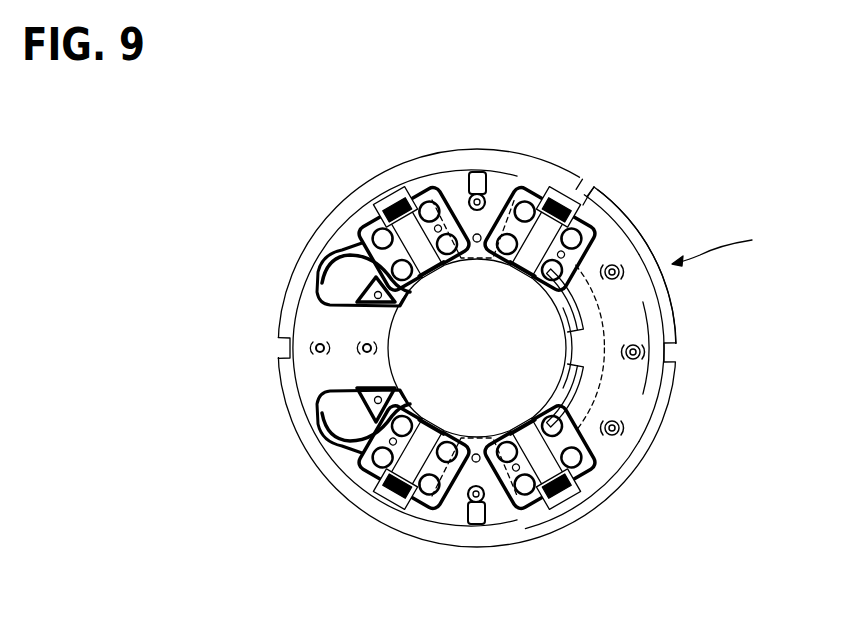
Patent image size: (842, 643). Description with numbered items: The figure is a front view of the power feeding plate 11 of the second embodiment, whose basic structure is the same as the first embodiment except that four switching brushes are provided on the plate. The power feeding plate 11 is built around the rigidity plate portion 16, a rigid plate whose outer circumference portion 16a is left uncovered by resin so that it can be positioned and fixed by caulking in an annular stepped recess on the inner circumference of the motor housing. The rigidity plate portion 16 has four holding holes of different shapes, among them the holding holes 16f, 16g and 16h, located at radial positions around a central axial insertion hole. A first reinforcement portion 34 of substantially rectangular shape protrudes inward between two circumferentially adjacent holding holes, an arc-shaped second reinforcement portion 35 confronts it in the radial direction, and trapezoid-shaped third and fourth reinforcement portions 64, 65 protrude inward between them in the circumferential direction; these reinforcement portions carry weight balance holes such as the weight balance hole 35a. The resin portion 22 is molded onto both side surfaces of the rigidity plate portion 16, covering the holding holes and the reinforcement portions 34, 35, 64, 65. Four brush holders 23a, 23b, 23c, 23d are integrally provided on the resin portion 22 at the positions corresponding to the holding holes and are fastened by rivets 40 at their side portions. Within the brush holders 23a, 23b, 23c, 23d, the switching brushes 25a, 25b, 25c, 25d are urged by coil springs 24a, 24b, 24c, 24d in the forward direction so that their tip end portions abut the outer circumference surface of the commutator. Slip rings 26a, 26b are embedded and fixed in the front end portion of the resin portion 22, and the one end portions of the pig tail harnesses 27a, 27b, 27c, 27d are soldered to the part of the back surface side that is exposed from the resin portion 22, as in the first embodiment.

The power feeding plate 11 is at (724, 245).
The rigidity plate portion 16 is at (641, 222).
The outer circumference portion 16a is at (666, 300).
The holding hole 16f is at (337, 248).
The holding hole 16g is at (596, 234).
The holding hole 16h is at (533, 513).
The resin portion 22 is at (652, 388).
The brush holder 23a is at (415, 222).
The brush holder 23b is at (537, 200).
The brush holder 23c is at (560, 478).
The brush holder 23d is at (420, 485).
The coil spring 24a is at (393, 205).
The coil spring 24b is at (568, 200).
The coil spring 24c is at (562, 495).
The coil spring 24d is at (390, 490).
The switching brush 25a is at (437, 272).
The switching brush 25b is at (517, 273).
The switching brush 25c is at (428, 422).
The switching brush 25d is at (527, 420).
The slip ring 26a is at (653, 345).
The slip ring 26b is at (302, 418).
The pig tail harness 27a is at (332, 288).
The pig tail harness 27b is at (578, 305).
The pig tail harness 27c is at (598, 398).
The pig tail harness 27d is at (340, 432).
The first reinforcement portion 34 is at (337, 364).
The second reinforcement portion 35 is at (582, 352).
The weight balance hole 35a is at (562, 296).
The rivet 40 is at (580, 462).
The third reinforcement portion 64 is at (494, 197).
The fourth reinforcement portion 65 is at (490, 500).